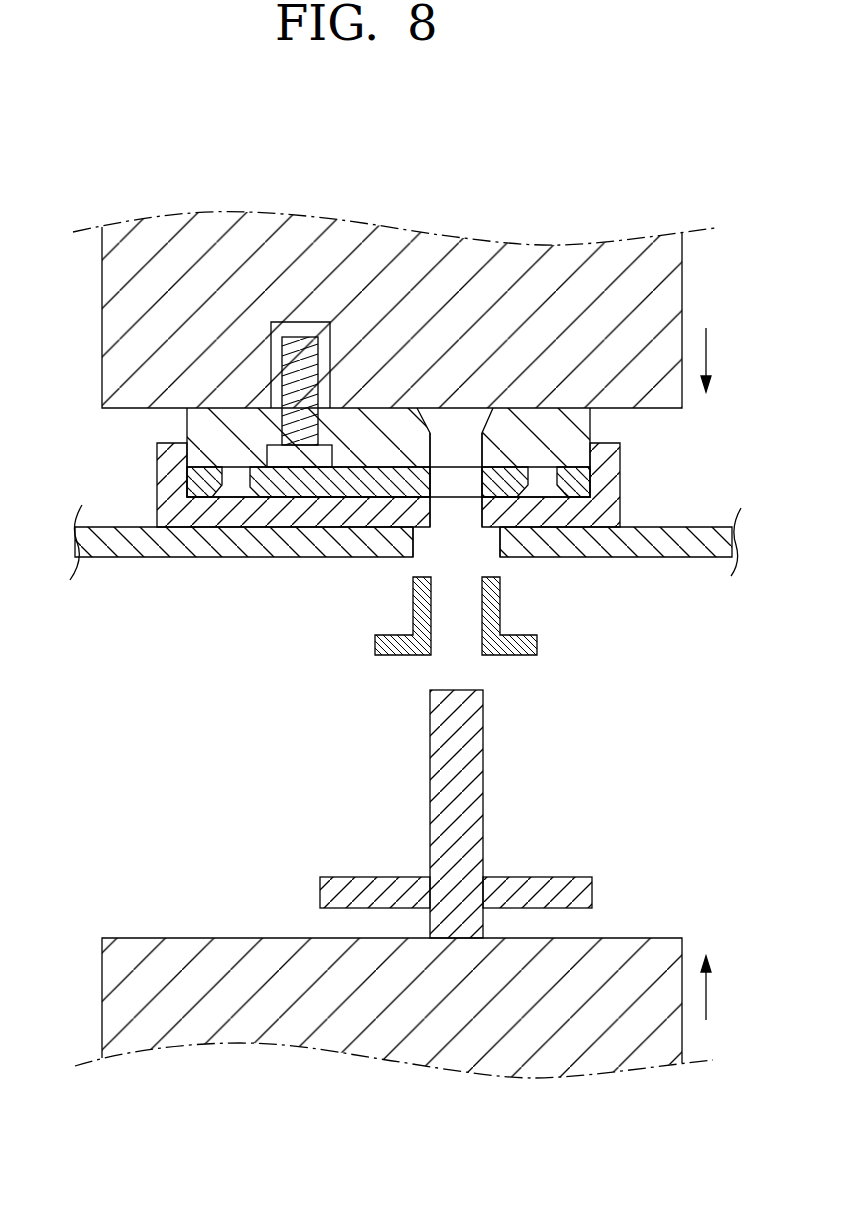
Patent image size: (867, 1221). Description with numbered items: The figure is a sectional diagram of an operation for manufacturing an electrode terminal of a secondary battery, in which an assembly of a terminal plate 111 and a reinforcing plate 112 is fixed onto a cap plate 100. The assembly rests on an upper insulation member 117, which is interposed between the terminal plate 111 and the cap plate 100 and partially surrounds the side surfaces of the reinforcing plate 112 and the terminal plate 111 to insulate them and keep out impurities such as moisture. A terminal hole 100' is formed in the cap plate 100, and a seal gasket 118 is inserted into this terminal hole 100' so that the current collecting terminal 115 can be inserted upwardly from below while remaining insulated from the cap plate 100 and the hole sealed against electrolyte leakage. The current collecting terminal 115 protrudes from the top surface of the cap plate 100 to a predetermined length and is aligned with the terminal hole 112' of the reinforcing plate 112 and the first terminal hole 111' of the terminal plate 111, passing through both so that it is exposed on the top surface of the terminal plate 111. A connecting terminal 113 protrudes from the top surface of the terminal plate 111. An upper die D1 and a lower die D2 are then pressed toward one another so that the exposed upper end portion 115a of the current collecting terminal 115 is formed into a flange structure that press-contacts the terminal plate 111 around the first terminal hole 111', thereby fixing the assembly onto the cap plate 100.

The cap plate 100 is at (405, 579).
The terminal hole 100' is at (539, 568).
The terminal plate 111 is at (403, 335).
The first terminal hole 111' is at (468, 349).
The reinforcing plate 112 is at (458, 480).
The terminal hole 112' is at (331, 542).
The connecting terminal 113 is at (300, 347).
The current collecting terminal 115 is at (456, 814).
The upper end portion 115a is at (477, 724).
The upper insulation member 117 is at (610, 455).
The seal gasket 118 is at (537, 652).
The upper die D1 is at (102, 358).
The lower die D2 is at (102, 970).